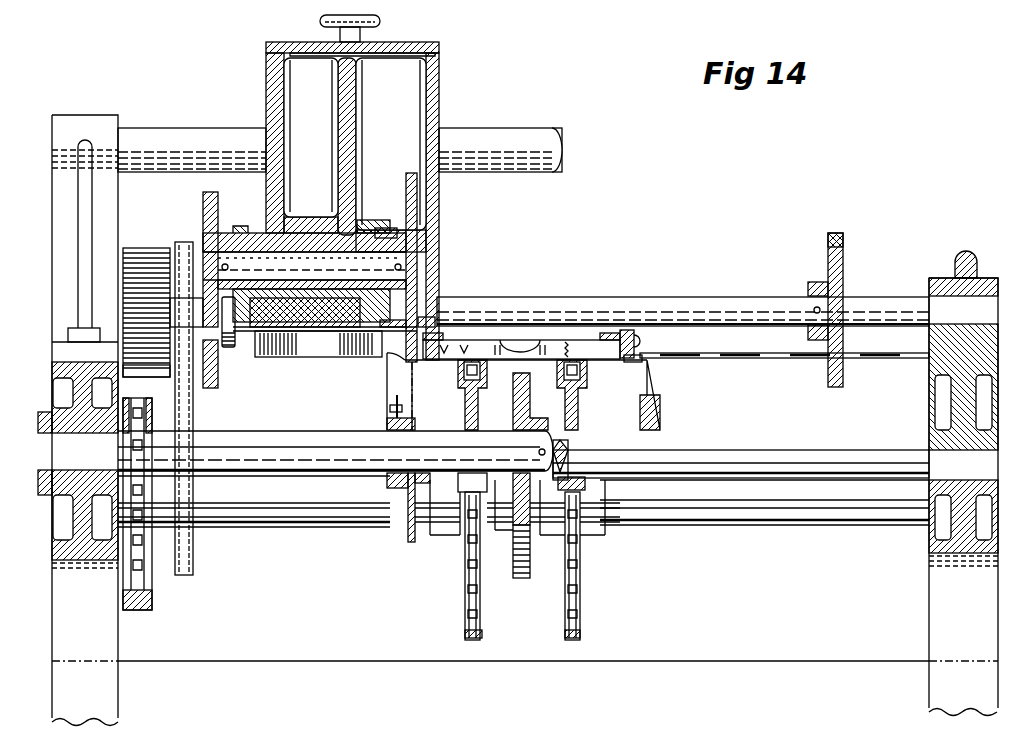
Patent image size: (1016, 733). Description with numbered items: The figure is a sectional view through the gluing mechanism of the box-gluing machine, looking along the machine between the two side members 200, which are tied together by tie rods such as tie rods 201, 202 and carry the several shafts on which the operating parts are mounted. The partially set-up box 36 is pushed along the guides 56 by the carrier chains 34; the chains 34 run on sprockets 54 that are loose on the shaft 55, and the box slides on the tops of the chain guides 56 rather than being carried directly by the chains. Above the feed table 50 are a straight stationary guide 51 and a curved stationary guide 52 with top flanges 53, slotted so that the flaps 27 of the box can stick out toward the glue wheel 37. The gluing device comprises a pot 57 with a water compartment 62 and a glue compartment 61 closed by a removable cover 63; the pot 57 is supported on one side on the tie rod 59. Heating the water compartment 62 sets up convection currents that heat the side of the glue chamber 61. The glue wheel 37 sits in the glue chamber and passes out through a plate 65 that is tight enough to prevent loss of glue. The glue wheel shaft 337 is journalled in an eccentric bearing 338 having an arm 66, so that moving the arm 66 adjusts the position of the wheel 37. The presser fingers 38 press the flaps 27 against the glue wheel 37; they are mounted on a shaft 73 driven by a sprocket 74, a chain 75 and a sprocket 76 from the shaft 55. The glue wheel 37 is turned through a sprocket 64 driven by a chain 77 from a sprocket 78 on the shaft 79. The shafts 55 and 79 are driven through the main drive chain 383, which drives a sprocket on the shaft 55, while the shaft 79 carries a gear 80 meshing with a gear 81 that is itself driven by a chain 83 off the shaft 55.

The flaps 27 is at (413, 362).
The carrier chains 34 is at (470, 380).
The partially set-up box 36 is at (490, 340).
The gluing wheel 37 is at (418, 205).
The presser fingers 38 is at (406, 535).
The feed table 50 is at (765, 356).
The straight stationary guide 51 is at (632, 338).
The curved stationary guide 52 is at (358, 345).
The top flanges 53 is at (443, 336).
The sprockets 54 is at (470, 582).
The shaft 55 is at (268, 527).
The chain guides 56 is at (458, 380).
The pot 57 is at (442, 90).
The tie rod 59 is at (237, 134).
The glue compartment 61 is at (410, 113).
The water compartment 62 is at (298, 86).
The removable cover 63 is at (397, 42).
The sprocket 64 is at (205, 214).
The plate 65 is at (432, 322).
The arm 66 is at (248, 232).
The shaft 73 is at (285, 438).
The sprocket 74 is at (515, 411).
The chain 75 is at (513, 546).
The sprocket 76 is at (540, 540).
The chain 77 is at (222, 380).
The sprocket 78 is at (236, 348).
The shaft 79 is at (605, 300).
The gear 80 is at (146, 250).
The gear 81 is at (138, 376).
The chain 83 is at (187, 413).
The side members 200 is at (62, 372).
The tie rod 201 is at (823, 456).
The tie rod 202 is at (565, 460).
The glue wheel shaft 337 is at (410, 262).
The eccentric bearing 338 is at (302, 245).
The main drive chain 383 is at (150, 580).